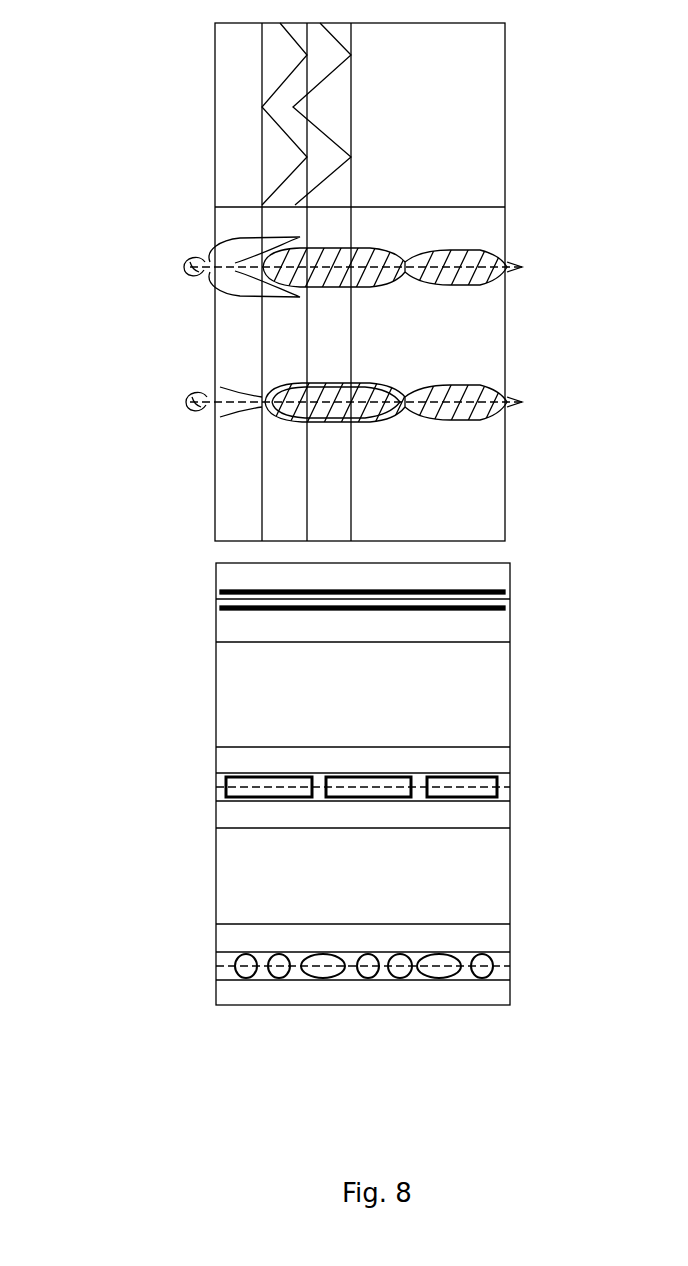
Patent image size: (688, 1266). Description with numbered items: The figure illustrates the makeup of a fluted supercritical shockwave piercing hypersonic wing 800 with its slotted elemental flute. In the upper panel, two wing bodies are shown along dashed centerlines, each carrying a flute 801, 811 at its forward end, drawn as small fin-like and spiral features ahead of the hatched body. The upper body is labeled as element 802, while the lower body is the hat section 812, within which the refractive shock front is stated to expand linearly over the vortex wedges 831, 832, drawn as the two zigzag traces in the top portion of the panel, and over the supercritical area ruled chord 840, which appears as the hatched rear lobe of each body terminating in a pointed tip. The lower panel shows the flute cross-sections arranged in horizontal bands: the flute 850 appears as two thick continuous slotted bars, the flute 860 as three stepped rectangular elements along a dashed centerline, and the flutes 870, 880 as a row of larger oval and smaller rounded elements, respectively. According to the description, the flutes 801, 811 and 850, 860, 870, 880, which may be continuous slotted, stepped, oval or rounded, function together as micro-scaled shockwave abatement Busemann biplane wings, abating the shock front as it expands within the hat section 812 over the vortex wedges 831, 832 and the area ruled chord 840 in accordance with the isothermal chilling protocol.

The supercritical shockwave piercing hypersonic wing 800 is at (185, 590).
The flute 801 is at (230, 296).
The first body 802 is at (330, 293).
The flute 811 is at (240, 412).
The hat section 812 is at (333, 427).
The vortex wedge 831 is at (300, 135).
The vortex wedge 832 is at (351, 157).
The supercritical area ruled chord 840 is at (403, 252).
The flute 850 is at (243, 612).
The flute 860 is at (250, 798).
The flute 870 is at (325, 983).
The flute 880 is at (247, 983).